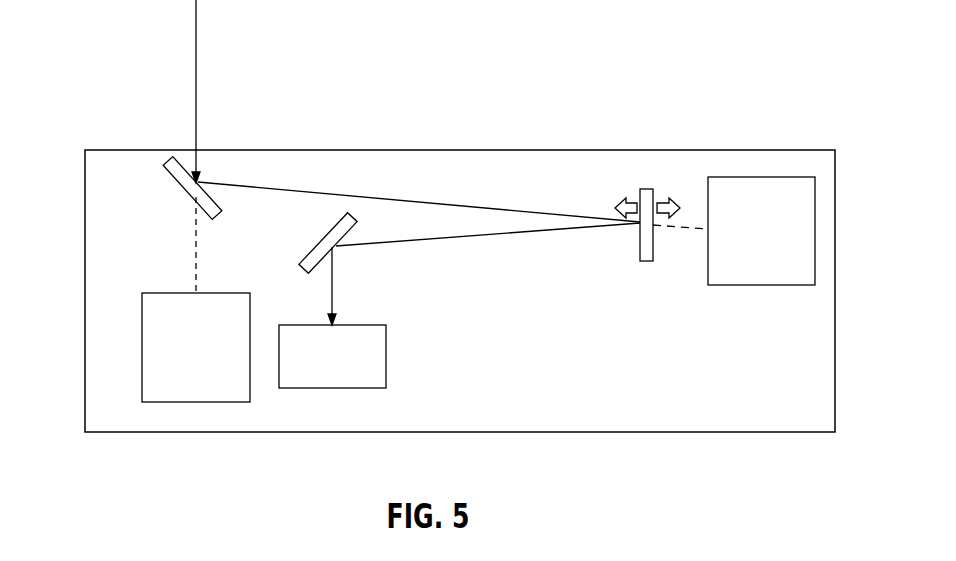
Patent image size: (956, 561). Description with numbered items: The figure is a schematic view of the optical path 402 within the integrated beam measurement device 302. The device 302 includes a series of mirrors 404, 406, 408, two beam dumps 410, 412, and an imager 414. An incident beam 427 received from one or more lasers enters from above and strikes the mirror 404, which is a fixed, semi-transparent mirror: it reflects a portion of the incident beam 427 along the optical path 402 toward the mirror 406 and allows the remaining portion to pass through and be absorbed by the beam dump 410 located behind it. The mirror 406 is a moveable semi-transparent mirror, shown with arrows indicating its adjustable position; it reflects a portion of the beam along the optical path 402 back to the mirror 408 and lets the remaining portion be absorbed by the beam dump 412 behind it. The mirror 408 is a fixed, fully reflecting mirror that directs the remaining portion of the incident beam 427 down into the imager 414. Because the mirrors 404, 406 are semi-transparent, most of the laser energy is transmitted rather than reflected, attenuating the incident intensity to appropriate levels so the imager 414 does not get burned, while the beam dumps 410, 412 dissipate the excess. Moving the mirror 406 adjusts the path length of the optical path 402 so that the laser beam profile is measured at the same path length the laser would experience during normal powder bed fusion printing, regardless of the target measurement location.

The integrated beam measurement device 302 is at (130, 38).
The incident beam 427 is at (196, 38).
The optical path 402 is at (320, 192).
The mirror 404 is at (178, 183).
The mirror 406 is at (647, 188).
The mirror 408 is at (348, 258).
The beam dump 410 is at (218, 361).
The beam dump 412 is at (785, 243).
The imager 414 is at (357, 369).